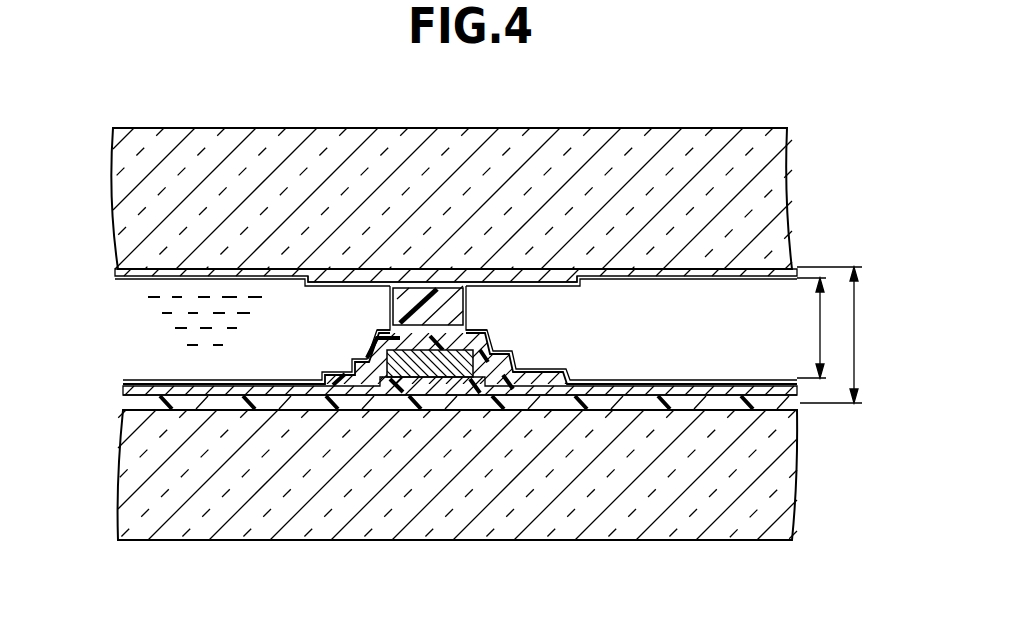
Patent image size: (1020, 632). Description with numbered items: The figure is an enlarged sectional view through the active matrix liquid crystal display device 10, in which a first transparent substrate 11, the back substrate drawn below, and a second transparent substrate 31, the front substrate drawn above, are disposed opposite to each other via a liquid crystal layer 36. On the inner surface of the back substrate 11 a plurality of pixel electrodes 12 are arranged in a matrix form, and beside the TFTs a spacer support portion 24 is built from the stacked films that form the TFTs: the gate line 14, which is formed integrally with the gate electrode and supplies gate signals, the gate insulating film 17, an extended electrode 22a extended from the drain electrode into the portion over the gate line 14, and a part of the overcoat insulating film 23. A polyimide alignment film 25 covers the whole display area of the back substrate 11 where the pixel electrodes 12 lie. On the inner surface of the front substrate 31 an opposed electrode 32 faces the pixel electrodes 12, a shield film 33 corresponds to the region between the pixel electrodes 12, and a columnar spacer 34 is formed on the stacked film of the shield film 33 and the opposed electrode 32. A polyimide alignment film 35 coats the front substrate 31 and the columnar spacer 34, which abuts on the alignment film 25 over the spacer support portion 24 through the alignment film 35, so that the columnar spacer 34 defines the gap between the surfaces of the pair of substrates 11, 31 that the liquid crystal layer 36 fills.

The active matrix liquid crystal display device 10 is at (742, 129).
The first transparent substrate 11 is at (762, 460).
The pixel electrodes 12 is at (192, 402).
The gate line 14 is at (478, 392).
The gate insulating film 17 is at (315, 397).
The extended electrode 22a is at (415, 365).
The overcoat insulating film 23 is at (393, 342).
The spacer support portion 24 is at (506, 344).
The alignment film 25 is at (660, 380).
The second transparent substrate 31 is at (762, 205).
The opposed electrode 32 is at (663, 270).
The shield film 33 is at (445, 268).
The columnar spacer 34 is at (448, 306).
The alignment film 35 is at (730, 282).
The liquid crystal layer 36 is at (130, 337).